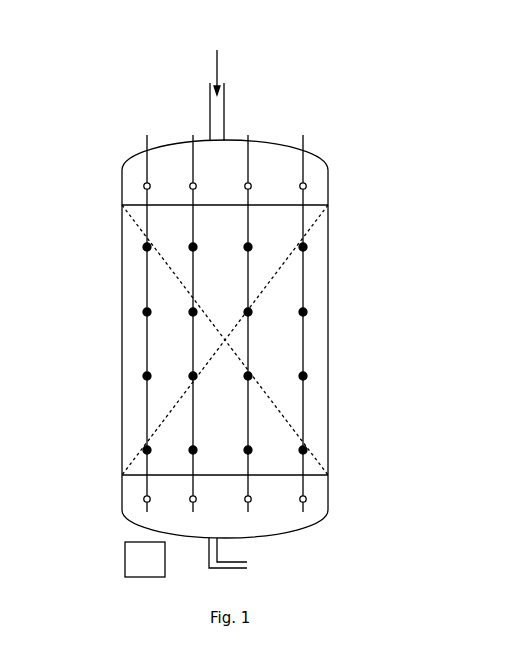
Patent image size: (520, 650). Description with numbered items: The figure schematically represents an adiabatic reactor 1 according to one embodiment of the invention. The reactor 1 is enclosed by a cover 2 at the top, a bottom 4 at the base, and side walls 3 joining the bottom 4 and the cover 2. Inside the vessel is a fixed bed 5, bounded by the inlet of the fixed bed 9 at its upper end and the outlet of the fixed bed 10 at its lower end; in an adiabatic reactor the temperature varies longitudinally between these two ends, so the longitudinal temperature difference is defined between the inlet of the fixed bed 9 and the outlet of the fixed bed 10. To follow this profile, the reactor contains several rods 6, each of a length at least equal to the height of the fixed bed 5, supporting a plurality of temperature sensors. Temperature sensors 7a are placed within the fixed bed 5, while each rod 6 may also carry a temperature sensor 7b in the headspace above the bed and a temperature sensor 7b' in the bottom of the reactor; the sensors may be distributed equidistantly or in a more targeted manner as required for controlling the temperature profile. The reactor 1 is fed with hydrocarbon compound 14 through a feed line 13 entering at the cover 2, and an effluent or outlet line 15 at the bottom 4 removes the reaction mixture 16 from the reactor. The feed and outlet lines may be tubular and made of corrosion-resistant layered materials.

The adiabatic reactor 1 is at (470, 180).
The cover 2 is at (328, 152).
The side walls 3 is at (336, 250).
The bottom 4 is at (326, 530).
The fixed bed 5 is at (335, 342).
The rod 6 is at (311, 417).
The temperature sensor 7a is at (135, 376).
The temperature sensor 7b is at (188, 185).
The temperature sensor 7b' is at (188, 499).
The inlet of the fixed bed 9 is at (323, 202).
The outlet of the fixed bed 10 is at (323, 478).
The feed line 13 is at (235, 108).
The hydrocarbon compound 14 is at (217, 61).
The outlet line 15 is at (200, 566).
The reaction mixture 16 is at (247, 565).